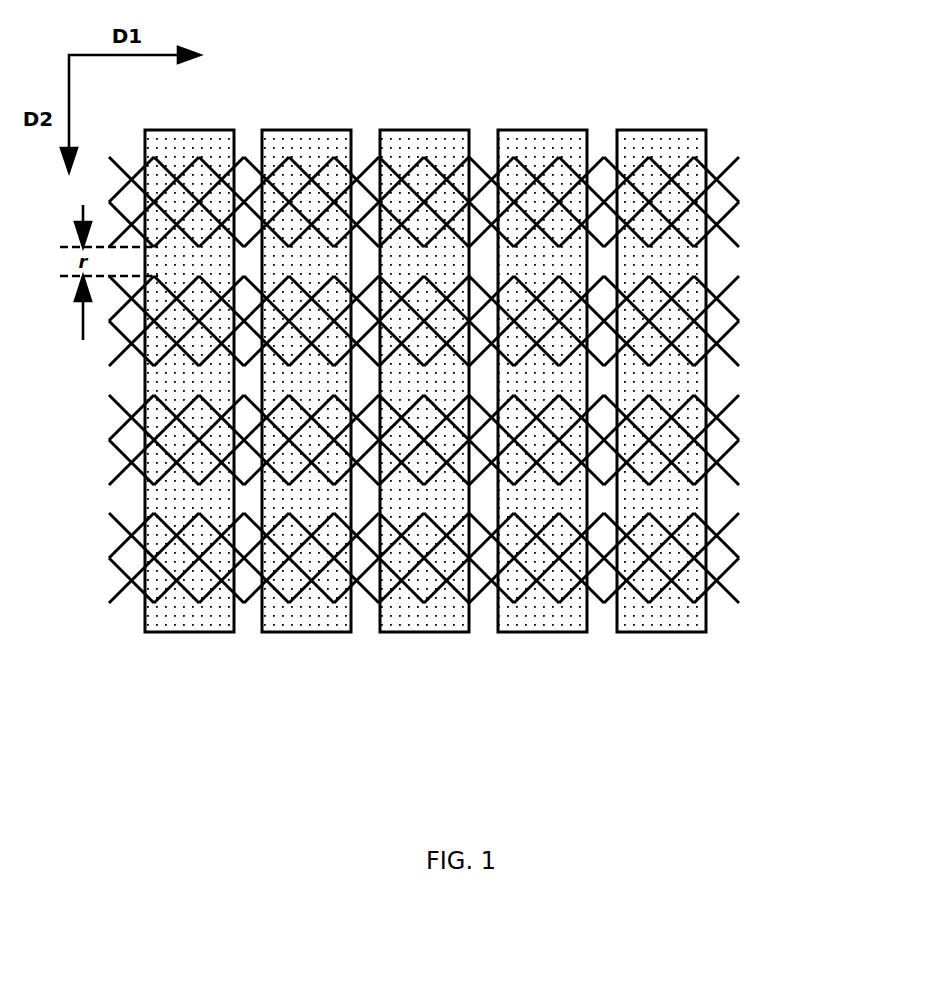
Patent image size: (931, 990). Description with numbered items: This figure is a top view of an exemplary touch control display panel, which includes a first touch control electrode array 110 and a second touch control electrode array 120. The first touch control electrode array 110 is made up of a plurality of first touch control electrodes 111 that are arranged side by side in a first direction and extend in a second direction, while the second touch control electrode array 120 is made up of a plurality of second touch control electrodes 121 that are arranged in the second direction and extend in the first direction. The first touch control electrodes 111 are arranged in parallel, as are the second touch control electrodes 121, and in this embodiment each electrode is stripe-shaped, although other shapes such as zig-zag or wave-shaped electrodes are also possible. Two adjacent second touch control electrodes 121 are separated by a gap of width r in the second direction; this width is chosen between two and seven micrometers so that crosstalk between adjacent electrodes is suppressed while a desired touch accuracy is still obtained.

The first touch control electrode array 110 is at (425, 399).
The first touch control electrode 111 is at (527, 148).
The second touch control electrode array 120 is at (477, 351).
The second touch control electrode 121 is at (467, 173).